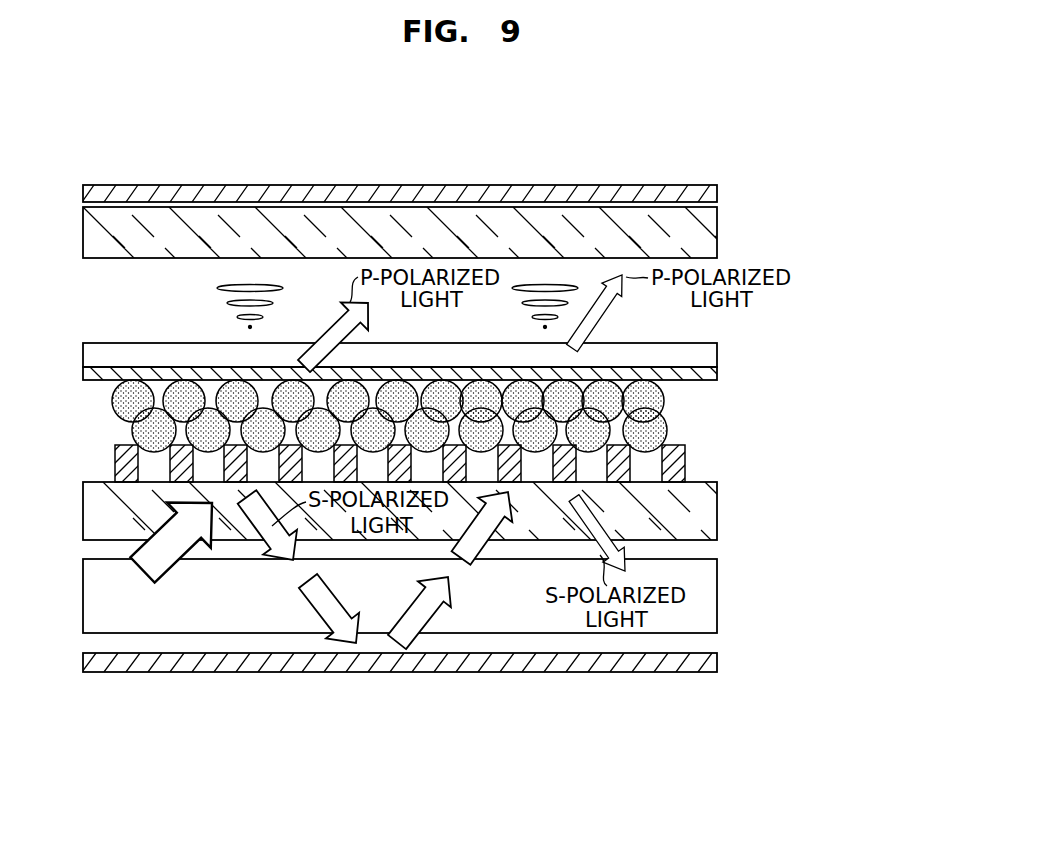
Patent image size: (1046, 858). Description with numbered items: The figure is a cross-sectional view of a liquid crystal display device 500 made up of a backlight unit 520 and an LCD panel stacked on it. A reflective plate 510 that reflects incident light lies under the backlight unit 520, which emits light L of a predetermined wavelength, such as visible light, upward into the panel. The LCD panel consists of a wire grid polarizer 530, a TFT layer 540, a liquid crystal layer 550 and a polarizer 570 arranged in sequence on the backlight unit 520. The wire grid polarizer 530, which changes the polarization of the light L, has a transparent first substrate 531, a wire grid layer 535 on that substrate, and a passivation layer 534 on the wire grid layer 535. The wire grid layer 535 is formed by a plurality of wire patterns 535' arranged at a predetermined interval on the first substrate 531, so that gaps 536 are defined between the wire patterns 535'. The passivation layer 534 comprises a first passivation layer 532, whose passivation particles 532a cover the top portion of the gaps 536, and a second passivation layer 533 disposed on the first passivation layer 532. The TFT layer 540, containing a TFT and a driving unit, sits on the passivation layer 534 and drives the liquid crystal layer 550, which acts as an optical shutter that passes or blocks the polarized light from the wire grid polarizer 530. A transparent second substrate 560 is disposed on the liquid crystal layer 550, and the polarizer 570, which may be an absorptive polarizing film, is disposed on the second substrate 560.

The LCD device 500 is at (705, 145).
The polarizer 570 is at (712, 194).
The second substrate 560 is at (712, 230).
The liquid crystal layer 550 is at (81, 262).
The TFT layer 540 is at (712, 357).
The second passivation layer 533 is at (712, 375).
The first passivation layer 532 is at (414, 416).
The passivation particles 532a is at (150, 430).
The passivation layer 534 is at (791, 363).
The wire grid layer 535 is at (460, 463).
The wire patterns 535' is at (526, 605).
The gaps 536 is at (155, 472).
The first substrate 531 is at (705, 519).
The wire grid polarizer 530 is at (847, 377).
The backlight unit 520 is at (712, 600).
The reflective plate 510 is at (712, 663).
The light L is at (172, 572).